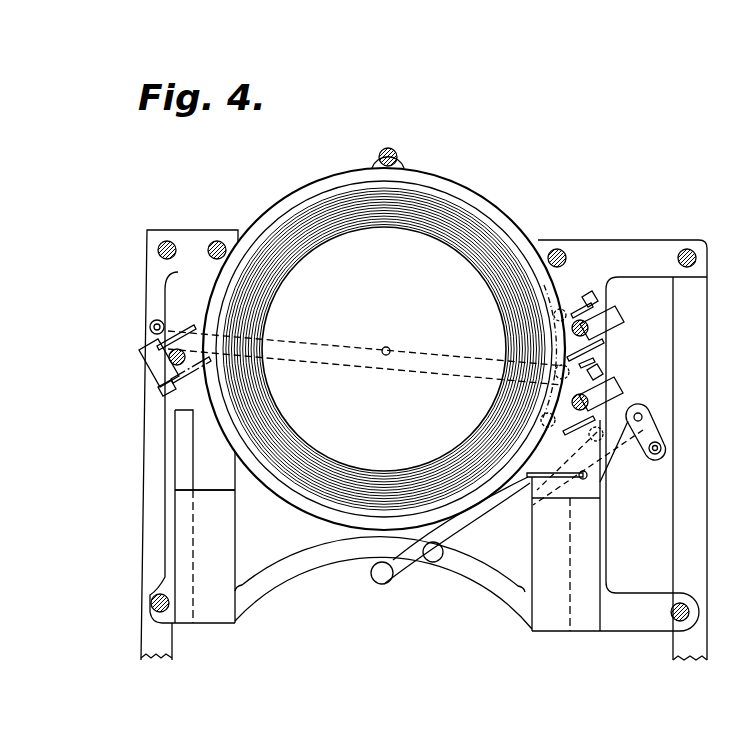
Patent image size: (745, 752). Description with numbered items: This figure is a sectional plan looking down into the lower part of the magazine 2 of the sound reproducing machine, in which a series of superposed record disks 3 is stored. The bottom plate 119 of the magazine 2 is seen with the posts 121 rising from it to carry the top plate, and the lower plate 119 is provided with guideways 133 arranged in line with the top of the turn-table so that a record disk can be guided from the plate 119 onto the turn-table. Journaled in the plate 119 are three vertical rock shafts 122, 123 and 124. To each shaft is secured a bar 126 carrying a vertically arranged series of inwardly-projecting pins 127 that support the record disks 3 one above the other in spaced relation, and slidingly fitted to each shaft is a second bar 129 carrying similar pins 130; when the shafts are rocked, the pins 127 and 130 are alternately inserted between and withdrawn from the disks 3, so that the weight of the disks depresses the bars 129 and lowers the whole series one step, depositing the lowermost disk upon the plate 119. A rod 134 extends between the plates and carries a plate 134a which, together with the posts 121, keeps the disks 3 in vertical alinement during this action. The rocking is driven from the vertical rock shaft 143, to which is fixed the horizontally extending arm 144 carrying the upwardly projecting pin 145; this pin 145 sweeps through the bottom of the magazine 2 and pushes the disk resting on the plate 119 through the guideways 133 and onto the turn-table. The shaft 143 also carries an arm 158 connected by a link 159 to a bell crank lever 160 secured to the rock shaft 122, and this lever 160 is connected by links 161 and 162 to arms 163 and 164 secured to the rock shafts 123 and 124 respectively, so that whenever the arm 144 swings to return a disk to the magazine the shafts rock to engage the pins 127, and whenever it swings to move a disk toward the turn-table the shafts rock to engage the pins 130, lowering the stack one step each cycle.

The magazine 2 is at (384, 343).
The record disks 3 is at (384, 349).
The bottom plate 119 is at (165, 272).
The posts 121 is at (394, 164).
The vertical rock shaft 122 is at (605, 388).
The vertical rock shaft 123 is at (614, 320).
The vertical rock shaft 124 is at (142, 351).
The bar 126 is at (150, 367).
The pins 127 is at (186, 326).
The bar 129 is at (162, 389).
The pins 130 is at (181, 388).
The guideways 133 is at (206, 622).
The rod 134 is at (600, 482).
The plate 134a is at (553, 480).
The vertical rock shaft 143 is at (641, 418).
The arm 144 is at (494, 508).
The pin 145 is at (390, 582).
The arm 158 is at (664, 445).
The link 159 is at (654, 455).
The bell crank lever 160 is at (565, 438).
The link 161 is at (535, 388).
The link 162 is at (423, 354).
The arm 163 is at (558, 292).
The arm 164 is at (150, 332).